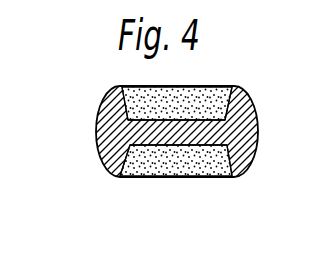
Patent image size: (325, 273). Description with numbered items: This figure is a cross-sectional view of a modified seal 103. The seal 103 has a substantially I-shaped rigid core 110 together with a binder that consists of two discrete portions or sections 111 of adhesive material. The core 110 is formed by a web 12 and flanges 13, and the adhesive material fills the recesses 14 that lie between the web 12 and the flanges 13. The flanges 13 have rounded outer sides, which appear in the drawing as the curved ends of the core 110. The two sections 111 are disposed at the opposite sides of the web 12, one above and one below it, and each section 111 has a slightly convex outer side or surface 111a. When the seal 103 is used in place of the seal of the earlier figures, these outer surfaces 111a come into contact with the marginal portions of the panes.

The modified seal 103 is at (172, 151).
The rigid core 110 is at (172, 151).
The flanges 13 is at (115, 130).
The recesses 14 is at (168, 98).
The web 12 is at (175, 130).
The sections of adhesive material 111 is at (195, 95).
The outer surfaces 111a is at (188, 179).